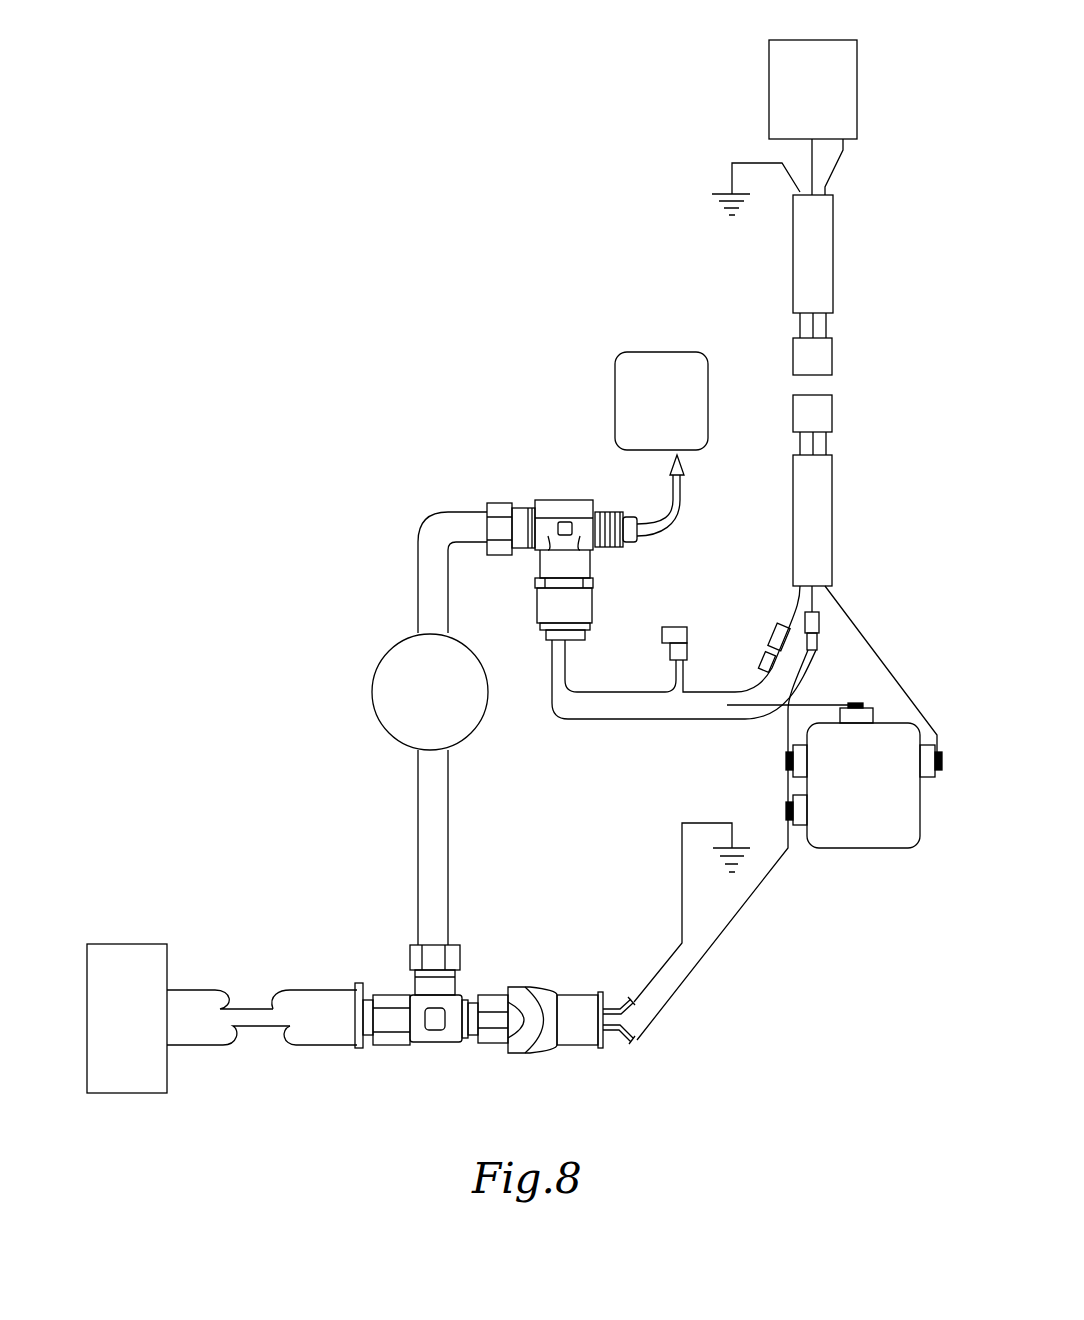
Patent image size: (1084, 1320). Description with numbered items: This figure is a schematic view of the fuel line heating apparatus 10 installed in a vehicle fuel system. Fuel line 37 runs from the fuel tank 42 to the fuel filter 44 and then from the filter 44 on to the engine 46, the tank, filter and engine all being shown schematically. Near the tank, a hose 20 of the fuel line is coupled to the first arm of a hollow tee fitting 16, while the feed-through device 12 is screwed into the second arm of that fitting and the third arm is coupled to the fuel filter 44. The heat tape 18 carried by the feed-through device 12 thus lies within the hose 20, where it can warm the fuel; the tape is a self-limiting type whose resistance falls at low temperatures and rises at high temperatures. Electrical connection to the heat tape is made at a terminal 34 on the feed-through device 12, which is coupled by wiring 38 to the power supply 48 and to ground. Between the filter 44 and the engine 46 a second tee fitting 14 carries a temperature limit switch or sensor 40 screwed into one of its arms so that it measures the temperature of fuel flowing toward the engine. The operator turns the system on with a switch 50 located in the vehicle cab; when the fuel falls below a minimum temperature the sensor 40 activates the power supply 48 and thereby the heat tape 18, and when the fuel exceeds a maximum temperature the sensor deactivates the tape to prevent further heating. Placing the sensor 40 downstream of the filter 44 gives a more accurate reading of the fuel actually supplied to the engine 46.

The fuel line heating apparatus 10 is at (552, 972).
The feed-through device 12 is at (532, 995).
The tee fitting 14 is at (580, 500).
The tee fitting 16 is at (407, 989).
The heat tape 18 is at (262, 1010).
The hose 20 is at (303, 1038).
The terminal 34 is at (622, 1035).
The fuel line 37 is at (418, 531).
The electrical wire 38 is at (682, 835).
The temperature limit switch or sensor 40 is at (550, 613).
The fuel tank 42 is at (130, 1082).
The fuel filter 44 is at (387, 660).
The engine 46 is at (652, 377).
The power supply 48 is at (827, 833).
The switch 50 is at (783, 58).